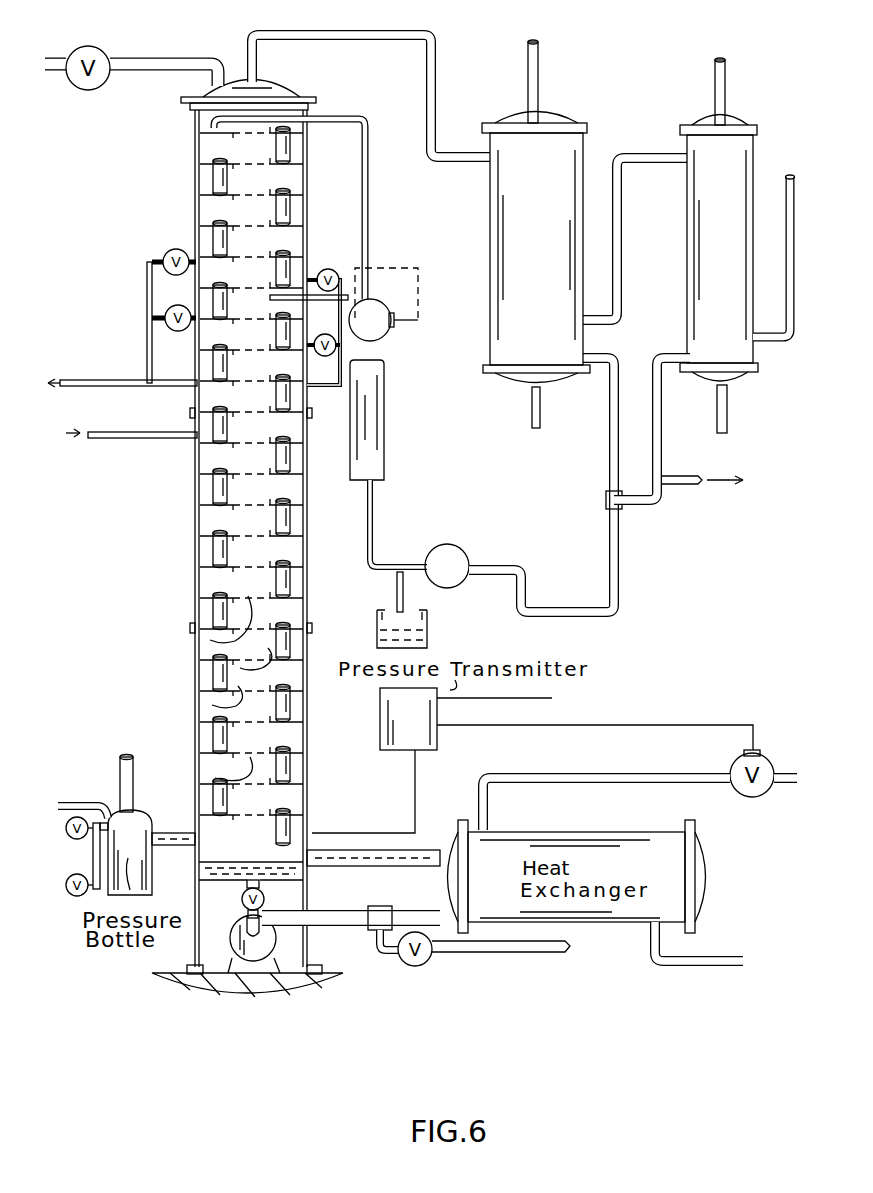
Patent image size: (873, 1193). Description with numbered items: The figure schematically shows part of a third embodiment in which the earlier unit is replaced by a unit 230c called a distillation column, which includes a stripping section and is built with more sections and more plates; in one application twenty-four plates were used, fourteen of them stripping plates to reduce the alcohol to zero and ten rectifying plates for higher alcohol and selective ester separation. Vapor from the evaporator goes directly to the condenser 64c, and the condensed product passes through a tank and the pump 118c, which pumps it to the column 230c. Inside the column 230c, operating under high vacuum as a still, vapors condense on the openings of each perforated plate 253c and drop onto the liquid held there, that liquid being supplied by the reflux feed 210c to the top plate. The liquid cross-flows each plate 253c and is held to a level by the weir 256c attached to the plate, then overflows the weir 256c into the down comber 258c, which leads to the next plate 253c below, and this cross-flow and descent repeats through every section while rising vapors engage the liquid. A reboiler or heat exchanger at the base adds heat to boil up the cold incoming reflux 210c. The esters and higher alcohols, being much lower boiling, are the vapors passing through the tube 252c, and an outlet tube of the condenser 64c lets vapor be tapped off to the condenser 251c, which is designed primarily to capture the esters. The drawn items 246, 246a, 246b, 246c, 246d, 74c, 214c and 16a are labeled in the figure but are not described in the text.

The distillation column 230c is at (145, 205).
The tube 252c is at (317, 33).
The reflux feed 210c is at (333, 116).
The sampling line 246 is at (146, 298).
The valve 246a is at (152, 266).
The valve 246b is at (160, 326).
The valve 246c is at (320, 268).
The control valve 246d is at (368, 352).
The line to heat exchanger 74c is at (92, 388).
The pump 118c is at (441, 544).
The cooler 214c is at (375, 450).
The condenser 64c is at (552, 274).
The condenser 251c is at (717, 263).
The collection tank 16a is at (428, 626).
The down comber 258c is at (213, 490).
The perforated plate 253c is at (205, 660).
The weir 256c is at (265, 660).